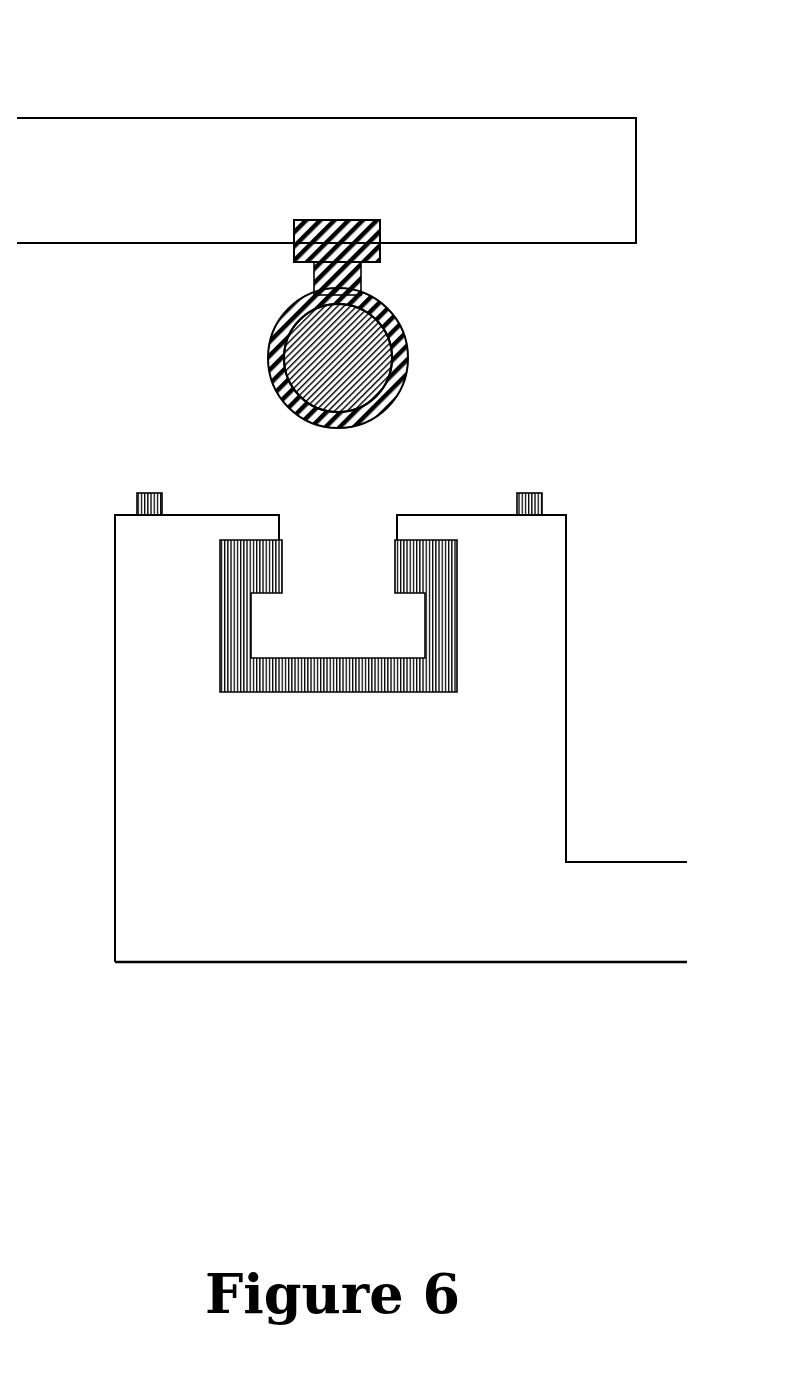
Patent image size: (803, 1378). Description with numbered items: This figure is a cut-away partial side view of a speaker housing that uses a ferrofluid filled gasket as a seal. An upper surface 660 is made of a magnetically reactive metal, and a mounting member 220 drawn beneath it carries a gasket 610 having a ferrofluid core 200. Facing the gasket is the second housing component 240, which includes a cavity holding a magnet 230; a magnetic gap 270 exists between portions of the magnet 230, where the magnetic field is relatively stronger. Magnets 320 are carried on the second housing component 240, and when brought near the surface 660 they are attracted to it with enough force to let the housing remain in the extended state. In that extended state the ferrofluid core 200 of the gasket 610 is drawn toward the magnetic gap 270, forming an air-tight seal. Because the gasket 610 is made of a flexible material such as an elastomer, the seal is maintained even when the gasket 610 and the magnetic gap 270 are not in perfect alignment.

The surface 660 is at (208, 240).
The mounting block 220 is at (322, 212).
The gasket 610 is at (406, 380).
The ferrofluid core 200 is at (316, 360).
The second housing component 240 is at (519, 661).
The magnet 230 is at (353, 668).
The magnetic gap 270 is at (376, 569).
The magnets 320 is at (138, 513).